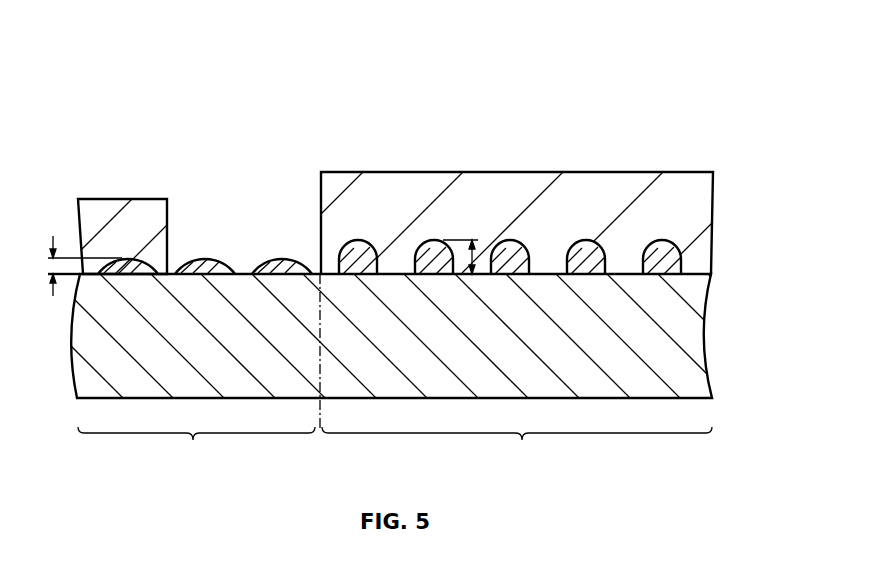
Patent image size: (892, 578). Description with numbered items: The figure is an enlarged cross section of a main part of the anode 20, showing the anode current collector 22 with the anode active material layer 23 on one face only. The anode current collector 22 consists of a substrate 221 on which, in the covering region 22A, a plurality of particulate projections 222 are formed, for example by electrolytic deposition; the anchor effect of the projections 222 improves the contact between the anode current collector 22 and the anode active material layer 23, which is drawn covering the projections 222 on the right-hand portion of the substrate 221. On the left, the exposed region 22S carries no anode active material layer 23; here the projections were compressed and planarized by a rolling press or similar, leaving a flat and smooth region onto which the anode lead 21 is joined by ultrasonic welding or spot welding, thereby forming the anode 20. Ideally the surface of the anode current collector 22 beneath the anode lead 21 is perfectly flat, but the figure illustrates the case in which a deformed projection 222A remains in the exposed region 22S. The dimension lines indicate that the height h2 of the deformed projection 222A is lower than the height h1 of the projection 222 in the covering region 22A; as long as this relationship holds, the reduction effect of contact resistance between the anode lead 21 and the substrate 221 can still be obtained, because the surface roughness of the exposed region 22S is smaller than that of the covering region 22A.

The anode 20 is at (578, 59).
The anode lead 21 is at (118, 228).
The anode current collector 22 is at (273, 121).
The substrate 221 is at (330, 290).
The projection 222 is at (375, 255).
The deformed projection 222A is at (210, 262).
The anode active material layer 23 is at (575, 187).
The height of projection h1 is at (481, 248).
The height of deformed projection h2 is at (82, 253).
The exposed region 22S is at (196, 451).
The covering region 22A is at (516, 373).